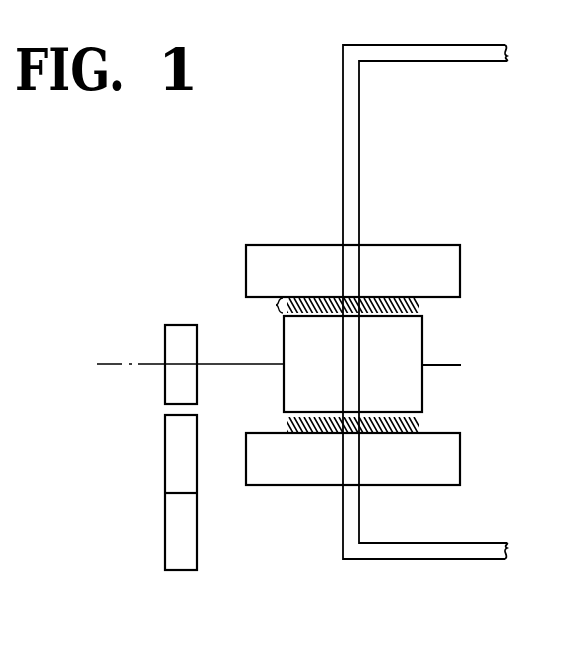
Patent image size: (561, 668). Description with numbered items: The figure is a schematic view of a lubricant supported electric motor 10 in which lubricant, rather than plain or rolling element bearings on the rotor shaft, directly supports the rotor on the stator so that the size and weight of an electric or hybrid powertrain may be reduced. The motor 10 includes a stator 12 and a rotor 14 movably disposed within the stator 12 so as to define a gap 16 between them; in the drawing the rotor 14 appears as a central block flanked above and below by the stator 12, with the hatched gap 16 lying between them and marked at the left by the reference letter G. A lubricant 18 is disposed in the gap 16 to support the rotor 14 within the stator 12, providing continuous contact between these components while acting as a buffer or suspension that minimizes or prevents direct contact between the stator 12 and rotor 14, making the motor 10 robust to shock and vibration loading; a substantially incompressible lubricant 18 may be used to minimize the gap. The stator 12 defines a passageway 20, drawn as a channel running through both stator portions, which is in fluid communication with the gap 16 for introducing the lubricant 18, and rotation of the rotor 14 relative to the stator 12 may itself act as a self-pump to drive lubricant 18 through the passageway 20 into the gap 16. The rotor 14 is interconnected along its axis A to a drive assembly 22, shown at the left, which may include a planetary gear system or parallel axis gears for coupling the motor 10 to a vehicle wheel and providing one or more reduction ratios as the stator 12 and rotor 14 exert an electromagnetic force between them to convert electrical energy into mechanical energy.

The lubricant supported electric motor 10 is at (245, 403).
The stator 12 is at (424, 245).
The rotor 14 is at (422, 340).
The gap 16 is at (424, 304).
The lubricant 18 is at (288, 428).
The passageway 20 is at (360, 267).
The drive assembly 22 is at (165, 473).
The rotation axis A is at (113, 363).
The gap G is at (275, 305).